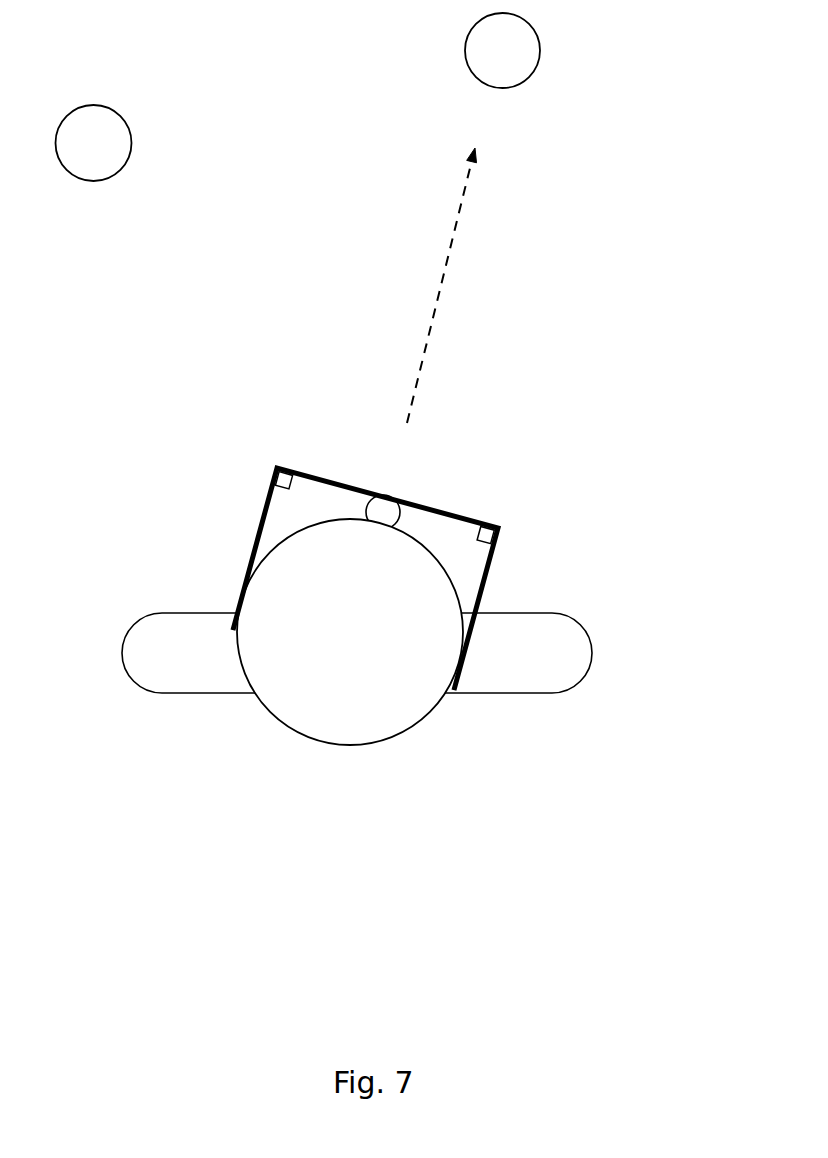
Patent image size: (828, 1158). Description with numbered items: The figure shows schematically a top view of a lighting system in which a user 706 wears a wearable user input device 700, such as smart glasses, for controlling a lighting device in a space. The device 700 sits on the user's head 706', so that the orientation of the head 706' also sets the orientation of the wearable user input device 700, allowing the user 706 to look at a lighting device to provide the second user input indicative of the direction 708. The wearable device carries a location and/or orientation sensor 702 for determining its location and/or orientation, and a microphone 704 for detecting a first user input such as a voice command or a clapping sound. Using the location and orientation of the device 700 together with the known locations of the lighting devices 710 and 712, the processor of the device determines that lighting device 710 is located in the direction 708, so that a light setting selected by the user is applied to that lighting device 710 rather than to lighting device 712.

The wearable user input device 700 is at (485, 582).
The orientation sensor 702 is at (497, 535).
The microphone 704 is at (275, 477).
The user 706 is at (406, 659).
The user's head 706' is at (376, 635).
The direction 708 is at (443, 283).
The lighting device 710 is at (522, 58).
The lighting device 712 is at (110, 150).